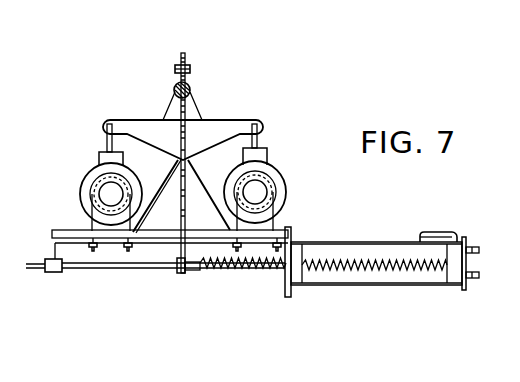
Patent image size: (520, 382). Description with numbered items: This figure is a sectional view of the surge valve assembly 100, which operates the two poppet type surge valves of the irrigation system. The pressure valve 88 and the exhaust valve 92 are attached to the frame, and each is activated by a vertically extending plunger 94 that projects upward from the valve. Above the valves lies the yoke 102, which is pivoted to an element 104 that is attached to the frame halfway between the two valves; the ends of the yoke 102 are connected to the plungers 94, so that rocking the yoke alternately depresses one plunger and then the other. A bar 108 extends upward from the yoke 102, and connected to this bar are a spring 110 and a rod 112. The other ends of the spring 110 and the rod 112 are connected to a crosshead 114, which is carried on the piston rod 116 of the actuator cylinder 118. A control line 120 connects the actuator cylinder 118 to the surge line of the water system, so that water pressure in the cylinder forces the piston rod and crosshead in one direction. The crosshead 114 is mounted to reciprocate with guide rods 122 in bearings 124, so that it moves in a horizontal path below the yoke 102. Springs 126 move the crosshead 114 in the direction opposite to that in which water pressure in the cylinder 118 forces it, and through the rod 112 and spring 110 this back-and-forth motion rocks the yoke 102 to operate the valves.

The surge valve assembly 100 is at (137, 72).
The yoke 102 is at (238, 121).
The element 104 is at (158, 183).
The bar 108 is at (192, 94).
The spring 110 is at (188, 247).
The rod 112 is at (187, 56).
The crosshead 114 is at (190, 273).
The piston rod 116 is at (272, 268).
The actuator cylinder 118 is at (386, 243).
The control line 120 is at (432, 235).
The guide rods 122 is at (165, 269).
The bearings 124 is at (48, 272).
The springs 126 is at (365, 268).
The pressure valve 88 is at (80, 179).
The exhaust valve 92 is at (288, 201).
The plungers 94 is at (107, 147).